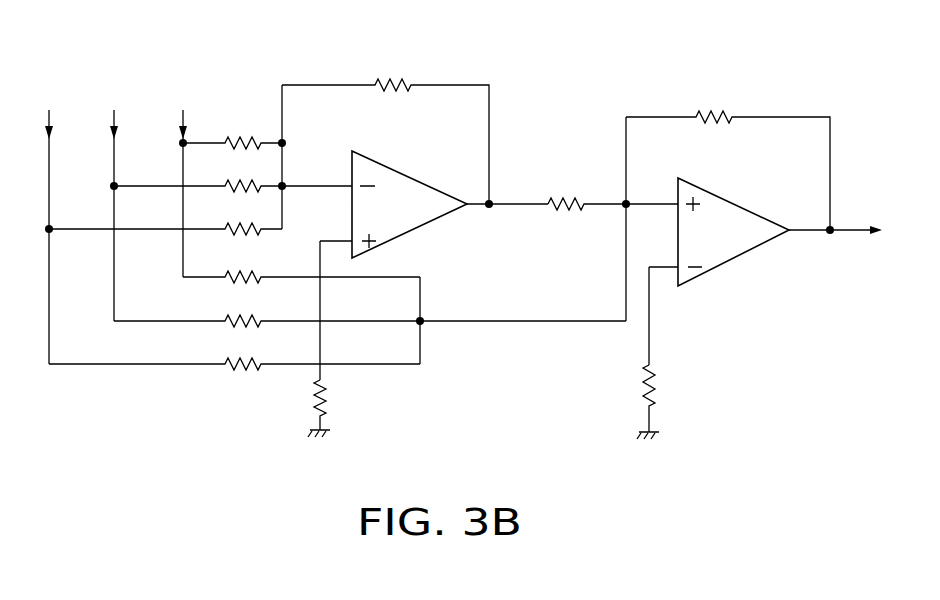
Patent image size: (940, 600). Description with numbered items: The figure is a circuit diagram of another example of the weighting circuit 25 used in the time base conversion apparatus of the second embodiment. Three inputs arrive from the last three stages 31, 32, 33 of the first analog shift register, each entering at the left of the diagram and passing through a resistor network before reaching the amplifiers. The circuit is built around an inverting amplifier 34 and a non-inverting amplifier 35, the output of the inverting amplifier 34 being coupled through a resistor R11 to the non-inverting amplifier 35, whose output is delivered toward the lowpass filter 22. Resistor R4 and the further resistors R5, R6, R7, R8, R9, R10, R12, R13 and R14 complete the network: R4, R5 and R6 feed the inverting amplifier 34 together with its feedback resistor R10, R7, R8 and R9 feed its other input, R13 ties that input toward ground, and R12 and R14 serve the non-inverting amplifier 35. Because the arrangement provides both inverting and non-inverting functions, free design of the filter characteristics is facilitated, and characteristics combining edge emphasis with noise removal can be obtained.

The weighting circuit 25 is at (534, 88).
The last stage of first analog shift register 31 is at (48, 223).
The last stage of first analog shift register 32 is at (114, 201).
The last stage of first analog shift register 33 is at (181, 179).
The inverting amplifier 34 is at (413, 184).
The non-inverting amplifier 35 is at (735, 203).
The lowpass filter 22 is at (853, 232).
The resistor R4 is at (234, 129).
The resistor R5 is at (233, 172).
The resistor R6 is at (165, 215).
The resistor R7 is at (301, 263).
The resistor R8 is at (370, 307).
The resistor R9 is at (234, 350).
The feedback resistor R10 is at (385, 126).
The resistor R11 is at (613, 188).
The feedback resistor R12 is at (728, 154).
The resistor R13 is at (338, 408).
The resistor R14 is at (668, 402).